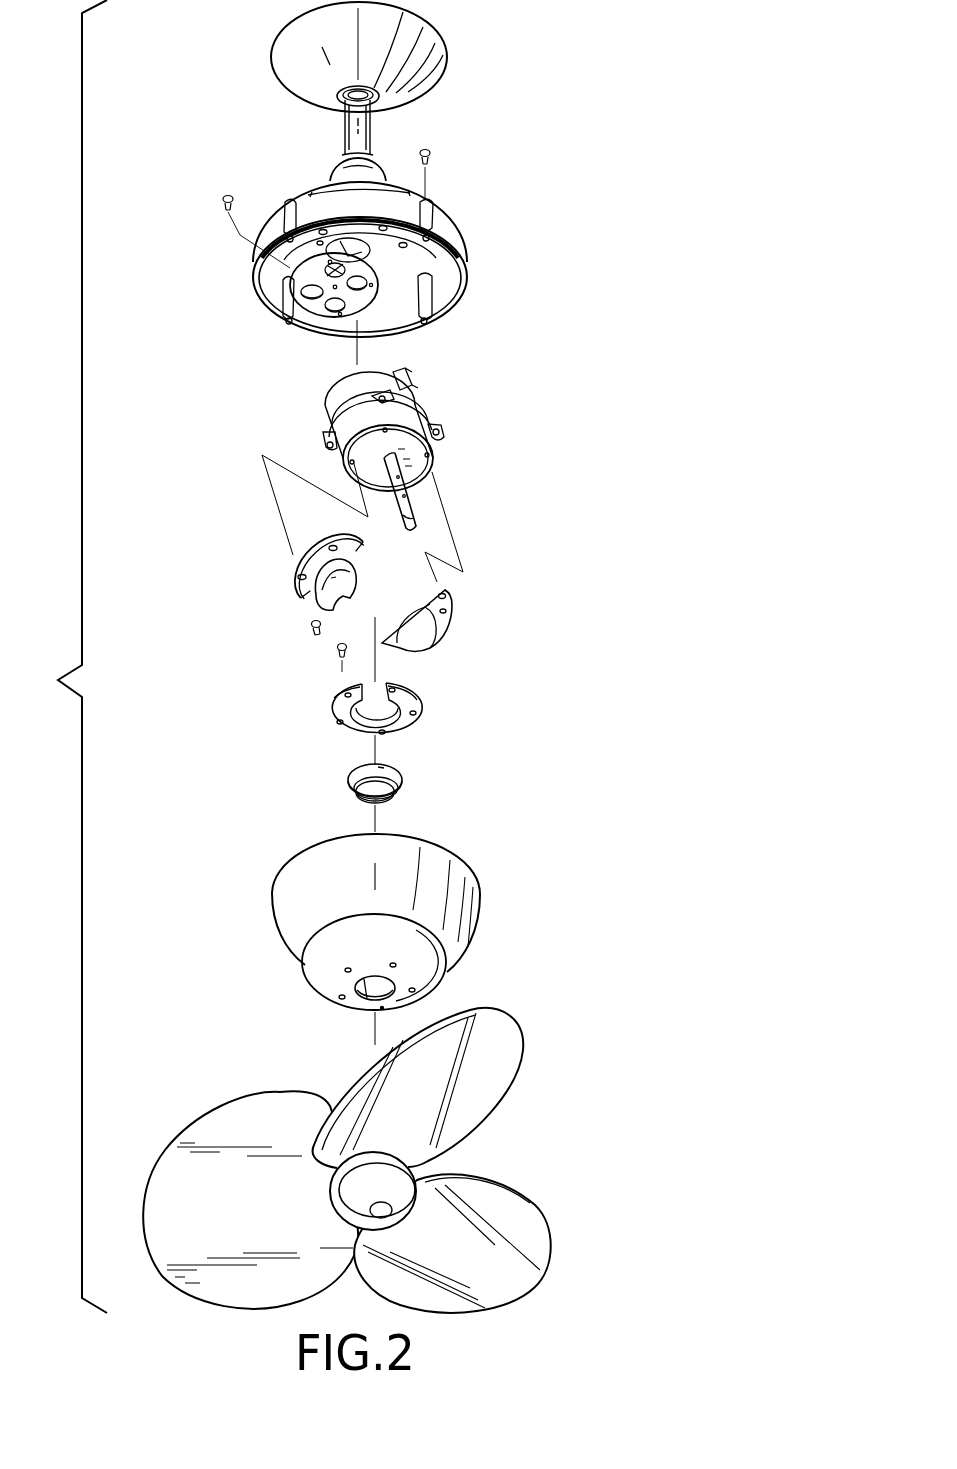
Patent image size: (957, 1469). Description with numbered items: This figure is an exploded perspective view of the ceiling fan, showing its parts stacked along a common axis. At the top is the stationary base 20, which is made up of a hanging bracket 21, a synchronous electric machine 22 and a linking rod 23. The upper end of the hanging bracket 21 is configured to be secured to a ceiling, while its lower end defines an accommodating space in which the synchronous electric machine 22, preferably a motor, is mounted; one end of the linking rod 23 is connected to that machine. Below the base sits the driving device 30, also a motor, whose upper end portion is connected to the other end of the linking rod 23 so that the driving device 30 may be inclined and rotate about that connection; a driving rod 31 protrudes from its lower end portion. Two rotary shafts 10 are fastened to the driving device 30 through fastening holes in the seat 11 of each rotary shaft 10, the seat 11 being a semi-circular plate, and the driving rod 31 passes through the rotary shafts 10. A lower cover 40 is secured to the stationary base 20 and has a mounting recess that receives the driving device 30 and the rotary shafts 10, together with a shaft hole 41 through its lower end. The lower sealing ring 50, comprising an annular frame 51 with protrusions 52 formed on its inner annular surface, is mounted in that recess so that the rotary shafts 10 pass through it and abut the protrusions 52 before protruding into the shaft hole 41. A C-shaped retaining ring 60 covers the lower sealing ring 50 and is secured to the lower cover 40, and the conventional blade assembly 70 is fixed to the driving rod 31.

The rotary shaft 10 is at (276, 591).
The seat 11 is at (442, 598).
The stationary base 20 is at (458, 137).
The hanging bracket 21 is at (302, 77).
The synchronous electric machine 22 is at (388, 252).
The linking rod 23 is at (333, 278).
The driving device 30 is at (453, 398).
The driving rod 31 is at (395, 472).
The lower cover 40 is at (298, 905).
The shaft hole 41 is at (372, 978).
The lower sealing ring 50 is at (408, 784).
The annular frame 51 is at (392, 776).
The protrusion 52 is at (358, 796).
The retaining ring 60 is at (340, 710).
The blade assembly 70 is at (490, 1087).